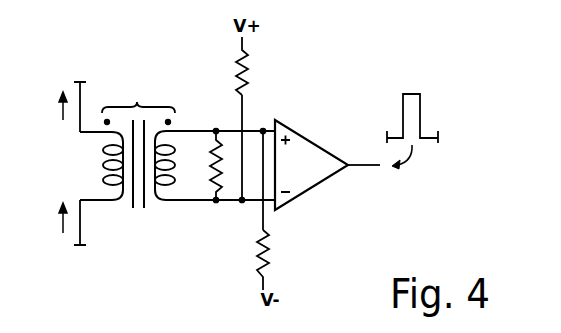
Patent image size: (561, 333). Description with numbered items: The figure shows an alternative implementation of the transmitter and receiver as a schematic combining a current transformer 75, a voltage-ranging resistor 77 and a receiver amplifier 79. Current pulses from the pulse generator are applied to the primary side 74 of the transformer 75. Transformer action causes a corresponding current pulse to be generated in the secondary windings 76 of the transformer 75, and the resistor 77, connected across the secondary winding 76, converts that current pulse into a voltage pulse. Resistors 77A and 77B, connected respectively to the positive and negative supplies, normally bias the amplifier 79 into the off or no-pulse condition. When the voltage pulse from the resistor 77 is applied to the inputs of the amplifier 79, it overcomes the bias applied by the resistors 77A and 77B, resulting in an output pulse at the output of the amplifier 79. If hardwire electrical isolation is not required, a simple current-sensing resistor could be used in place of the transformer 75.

The primary side 74 is at (106, 165).
The current transformer 75 is at (138, 142).
The secondary windings 76 is at (176, 176).
The voltage-ranging resistor 77 is at (168, 201).
The bias resistor 77A is at (247, 57).
The bias resistor 77B is at (268, 248).
The receiver amplifier 79 is at (310, 138).